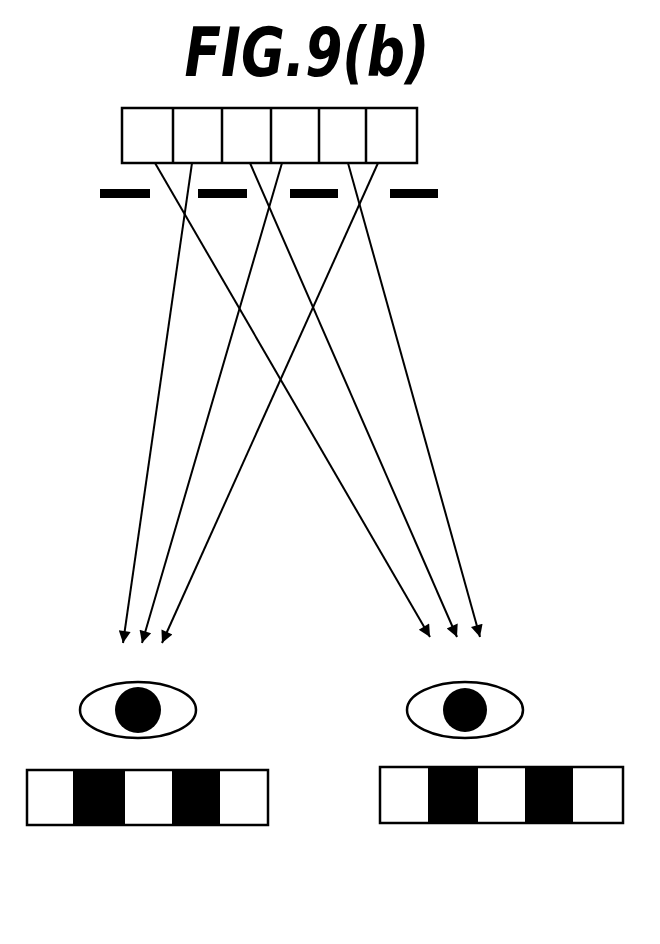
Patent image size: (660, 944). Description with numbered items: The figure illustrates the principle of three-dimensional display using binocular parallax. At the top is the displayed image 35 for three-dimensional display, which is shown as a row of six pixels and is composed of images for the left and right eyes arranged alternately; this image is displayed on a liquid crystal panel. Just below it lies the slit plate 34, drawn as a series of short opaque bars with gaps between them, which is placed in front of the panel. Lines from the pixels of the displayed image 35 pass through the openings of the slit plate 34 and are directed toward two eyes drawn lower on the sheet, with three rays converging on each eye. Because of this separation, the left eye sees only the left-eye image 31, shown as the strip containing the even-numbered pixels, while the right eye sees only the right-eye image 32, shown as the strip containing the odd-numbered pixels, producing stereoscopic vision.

The displayed image for 3D display 35 is at (417, 130).
The slit plate 34 is at (423, 198).
The left-eye image 31 is at (190, 825).
The right-eye image 32 is at (552, 823).